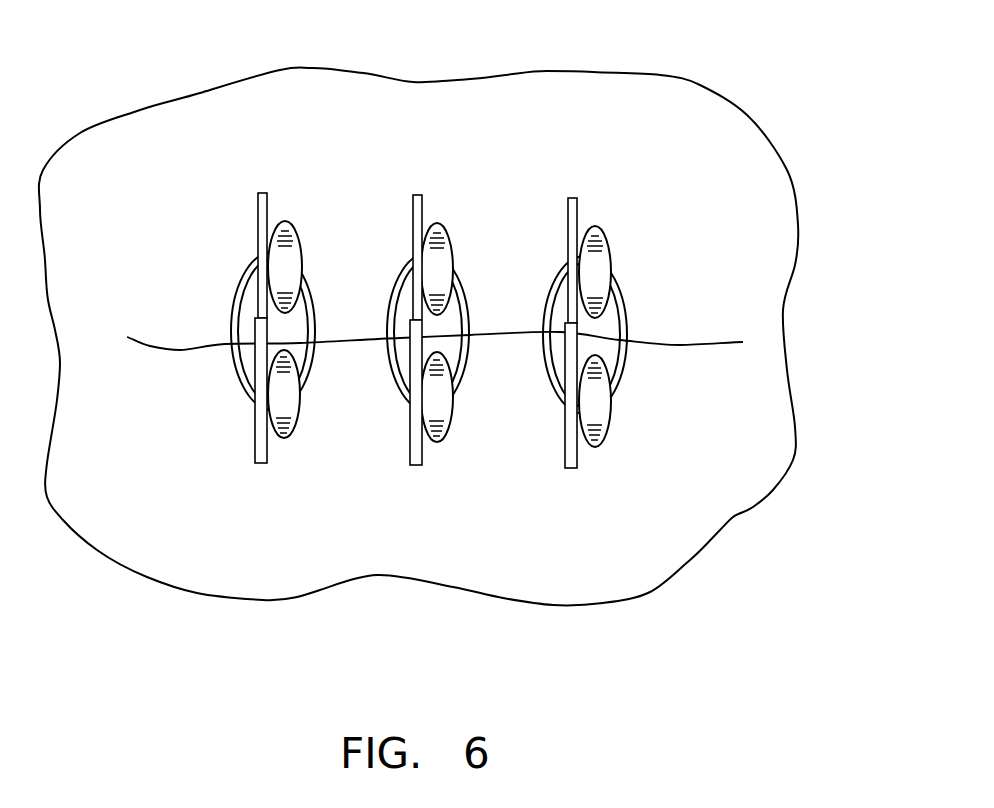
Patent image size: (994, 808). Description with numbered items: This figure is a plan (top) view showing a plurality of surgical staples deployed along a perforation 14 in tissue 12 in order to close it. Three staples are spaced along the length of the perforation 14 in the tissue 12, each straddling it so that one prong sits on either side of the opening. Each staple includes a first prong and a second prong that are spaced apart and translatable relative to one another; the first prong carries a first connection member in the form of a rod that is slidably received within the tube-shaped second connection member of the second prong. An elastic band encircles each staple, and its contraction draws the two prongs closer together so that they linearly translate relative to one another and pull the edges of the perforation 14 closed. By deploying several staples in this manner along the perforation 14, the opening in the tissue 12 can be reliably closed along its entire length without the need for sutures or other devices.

The tissue / body wall 12 is at (615, 108).
The perforation 14 is at (707, 342).